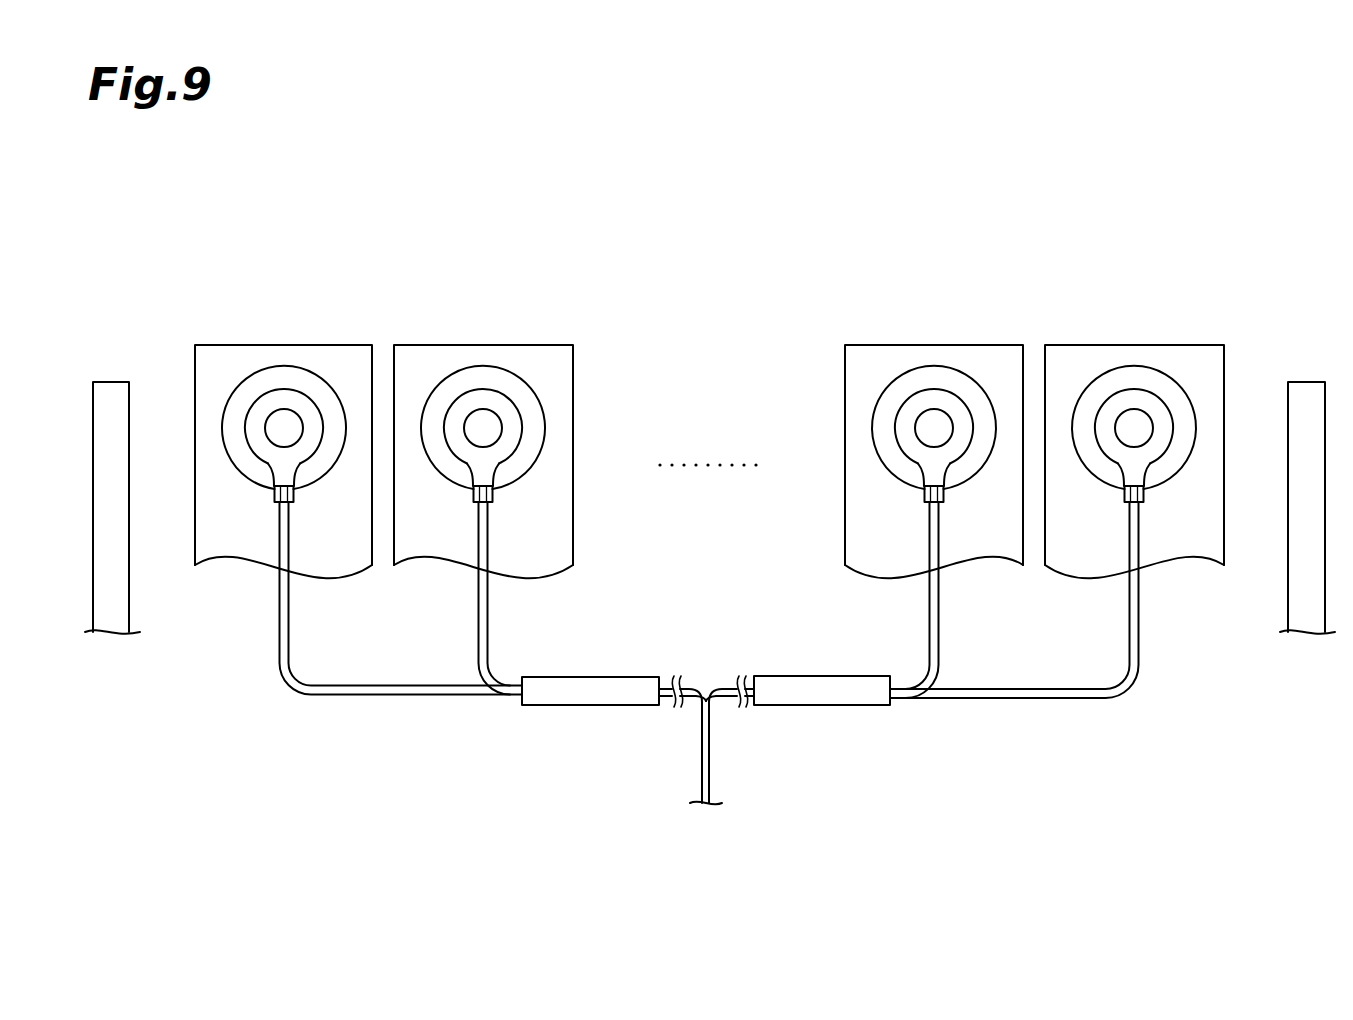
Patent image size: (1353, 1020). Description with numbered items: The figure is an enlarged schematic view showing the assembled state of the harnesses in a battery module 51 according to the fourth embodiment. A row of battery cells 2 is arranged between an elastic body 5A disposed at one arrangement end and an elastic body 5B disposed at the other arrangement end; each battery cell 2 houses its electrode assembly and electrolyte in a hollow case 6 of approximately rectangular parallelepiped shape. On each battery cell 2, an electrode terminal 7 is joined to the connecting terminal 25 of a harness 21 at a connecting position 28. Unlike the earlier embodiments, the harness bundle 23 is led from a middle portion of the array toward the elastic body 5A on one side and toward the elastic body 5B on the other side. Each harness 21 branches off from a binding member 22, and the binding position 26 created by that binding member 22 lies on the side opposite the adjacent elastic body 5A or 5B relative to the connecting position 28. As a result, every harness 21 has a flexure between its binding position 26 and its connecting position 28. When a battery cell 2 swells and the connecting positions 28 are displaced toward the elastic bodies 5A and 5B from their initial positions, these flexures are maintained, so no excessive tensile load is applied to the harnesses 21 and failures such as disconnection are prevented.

The battery module 51 is at (178, 232).
The elastic body 5A is at (113, 382).
The elastic body 5B is at (1306, 382).
The battery cell 2 is at (710, 434).
The case 6 is at (195, 547).
The electrode terminal 7 is at (230, 398).
The connecting terminal 25 is at (245, 430).
The connecting position 28 is at (275, 493).
The harness 21 is at (279, 620).
The binding member 22 is at (629, 677).
The binding position 26 is at (519, 677).
The harness bundle 23 is at (681, 750).